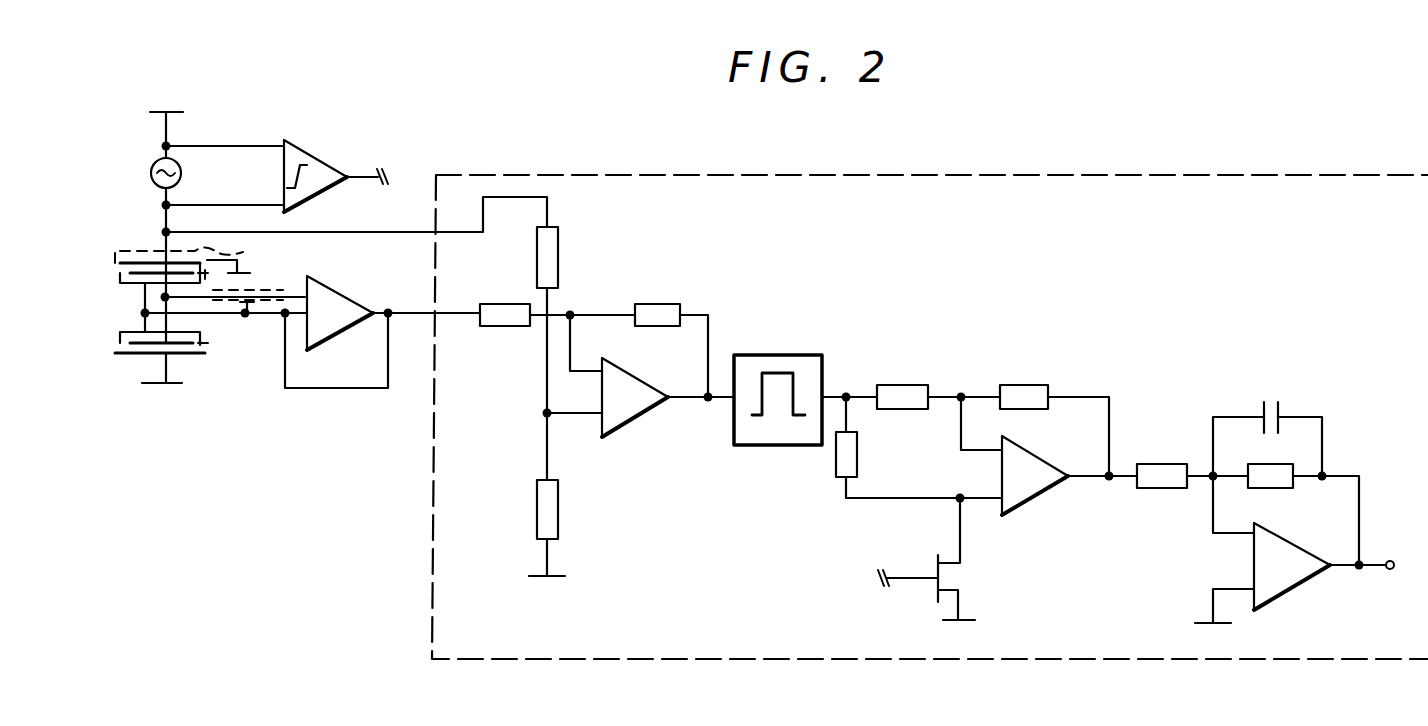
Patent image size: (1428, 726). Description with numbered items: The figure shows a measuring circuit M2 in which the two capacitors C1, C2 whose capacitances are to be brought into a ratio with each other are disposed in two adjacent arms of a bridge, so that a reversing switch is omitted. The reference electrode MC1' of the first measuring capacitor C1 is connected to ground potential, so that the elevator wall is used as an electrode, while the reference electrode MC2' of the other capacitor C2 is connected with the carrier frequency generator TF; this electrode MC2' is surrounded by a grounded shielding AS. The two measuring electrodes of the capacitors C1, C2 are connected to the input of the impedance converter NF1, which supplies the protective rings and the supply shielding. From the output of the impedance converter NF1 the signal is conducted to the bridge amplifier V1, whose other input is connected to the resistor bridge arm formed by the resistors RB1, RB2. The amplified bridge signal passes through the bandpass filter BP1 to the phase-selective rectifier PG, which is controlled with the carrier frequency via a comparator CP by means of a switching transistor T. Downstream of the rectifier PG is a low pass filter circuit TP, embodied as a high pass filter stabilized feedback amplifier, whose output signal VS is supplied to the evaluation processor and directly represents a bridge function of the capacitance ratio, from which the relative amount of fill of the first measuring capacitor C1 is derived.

The carrier frequency generator TF is at (187, 173).
The comparator CP is at (328, 170).
The reference electrode MC2' is at (122, 229).
The capacitor C2 is at (118, 272).
The first measuring capacitor C1 is at (117, 347).
The reference electrode MC1' is at (127, 382).
The shielding AS is at (199, 274).
The impedance converter NF1 is at (345, 328).
The measuring circuit M2 is at (835, 307).
The resistor RB1 is at (537, 256).
The resistor RB2 is at (537, 509).
The bridge amplifier V1 is at (638, 421).
The bandpass filter BP1 is at (776, 445).
The phase-selective rectifier PG is at (1042, 490).
The switching transistor T is at (936, 590).
The low pass filter circuit TP is at (1258, 553).
The output signal VS is at (1390, 570).